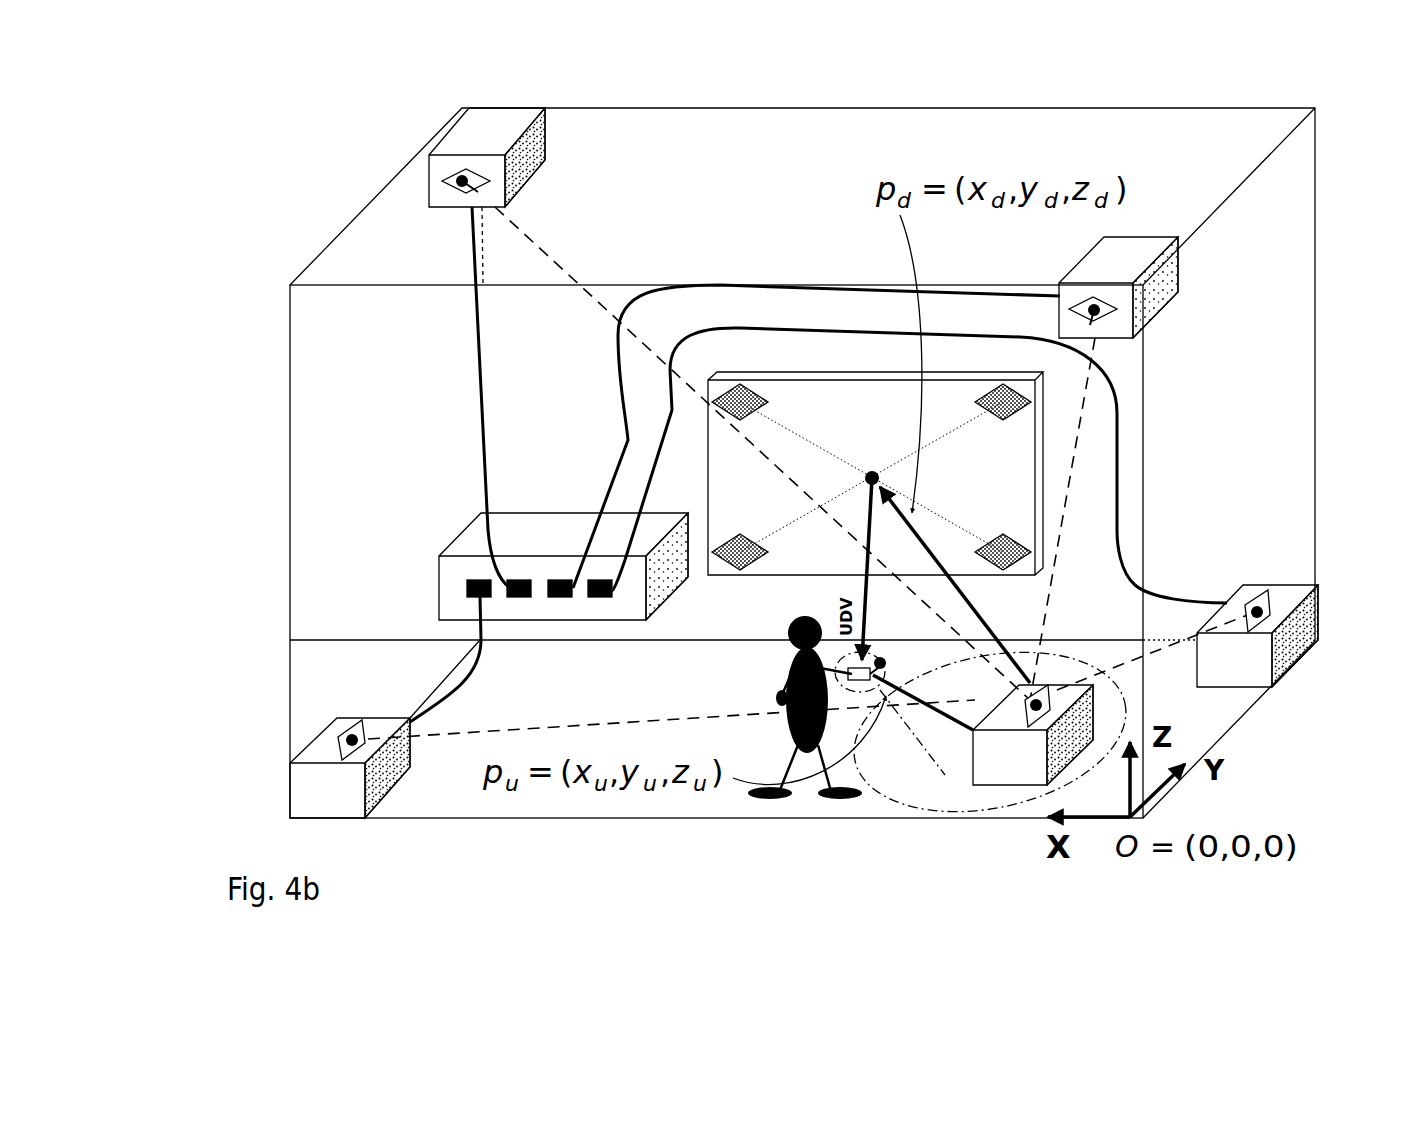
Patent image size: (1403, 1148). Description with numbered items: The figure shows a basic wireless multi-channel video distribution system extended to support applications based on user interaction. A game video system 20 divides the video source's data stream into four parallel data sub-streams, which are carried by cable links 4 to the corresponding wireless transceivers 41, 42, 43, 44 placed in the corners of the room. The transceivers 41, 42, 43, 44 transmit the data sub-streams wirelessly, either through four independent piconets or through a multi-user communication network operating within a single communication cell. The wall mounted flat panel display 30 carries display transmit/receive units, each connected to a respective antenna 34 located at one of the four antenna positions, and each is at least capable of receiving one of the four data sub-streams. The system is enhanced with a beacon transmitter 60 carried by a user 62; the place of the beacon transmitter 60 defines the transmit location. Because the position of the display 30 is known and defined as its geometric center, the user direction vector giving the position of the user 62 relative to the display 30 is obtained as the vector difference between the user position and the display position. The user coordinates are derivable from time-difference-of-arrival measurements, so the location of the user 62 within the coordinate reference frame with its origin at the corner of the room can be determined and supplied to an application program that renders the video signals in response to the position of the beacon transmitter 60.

The cable links 4 is at (616, 386).
The GVS 20 is at (441, 540).
The display 30 is at (1043, 457).
The antenna 34 is at (750, 392).
The wireless transceiver 41 is at (290, 765).
The wireless transceiver 42 is at (448, 140).
The wireless transceiver 43 is at (1178, 265).
The wireless transceiver 44 is at (1262, 688).
The beacon transmitter 60 is at (880, 664).
The user 62 is at (760, 690).